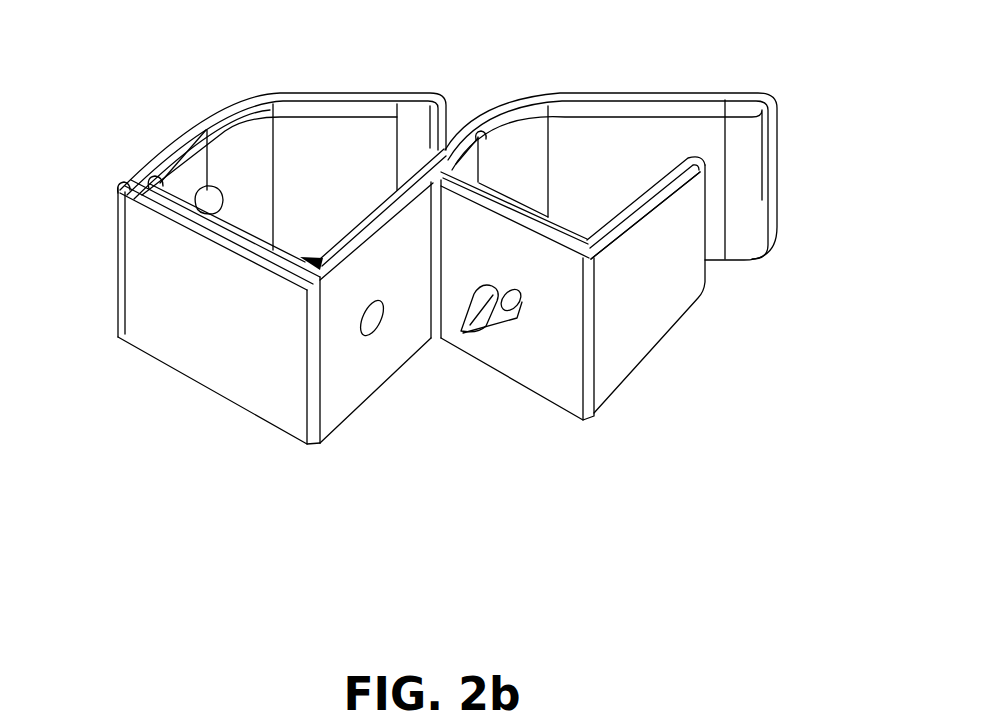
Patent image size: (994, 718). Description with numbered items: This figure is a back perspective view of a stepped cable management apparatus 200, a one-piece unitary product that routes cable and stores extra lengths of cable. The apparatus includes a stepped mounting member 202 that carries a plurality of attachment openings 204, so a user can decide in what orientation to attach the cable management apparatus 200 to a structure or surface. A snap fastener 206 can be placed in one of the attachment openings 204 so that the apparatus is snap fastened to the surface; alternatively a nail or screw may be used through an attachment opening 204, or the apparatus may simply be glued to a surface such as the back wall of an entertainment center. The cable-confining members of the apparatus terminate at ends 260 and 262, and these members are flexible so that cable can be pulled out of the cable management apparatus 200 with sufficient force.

The stepped cable management apparatus 200 is at (461, 317).
The stepped mounting member 202 is at (663, 300).
The attachment opening 204 is at (382, 336).
The snap fastener 206 is at (505, 293).
The end 260 is at (751, 95).
The end 262 is at (423, 96).